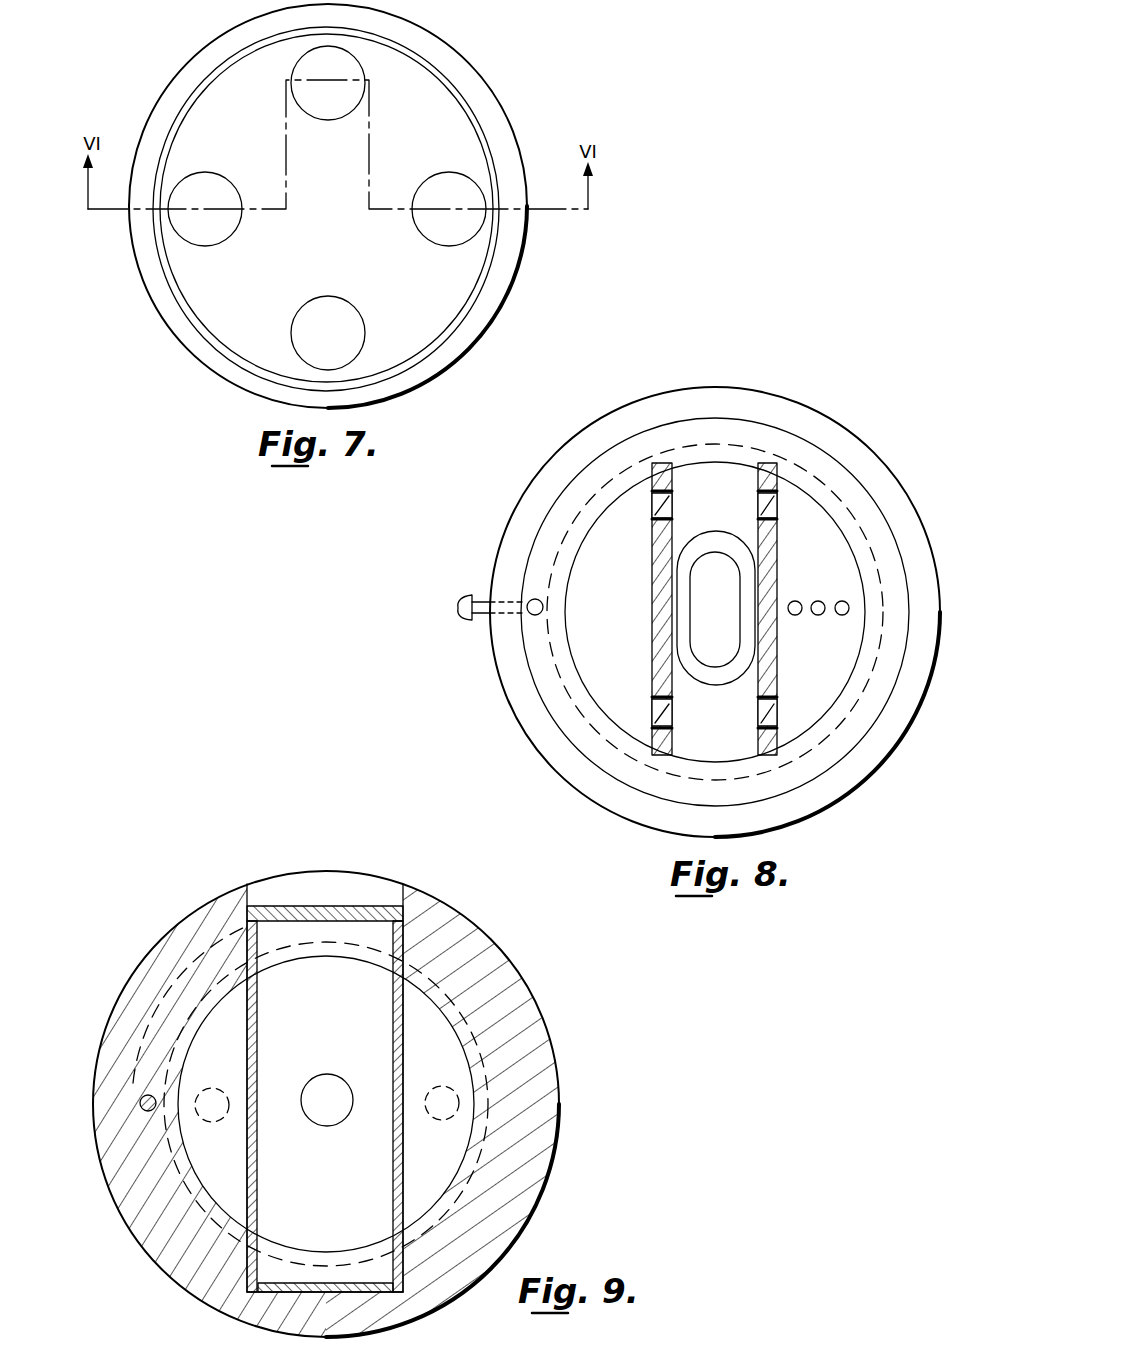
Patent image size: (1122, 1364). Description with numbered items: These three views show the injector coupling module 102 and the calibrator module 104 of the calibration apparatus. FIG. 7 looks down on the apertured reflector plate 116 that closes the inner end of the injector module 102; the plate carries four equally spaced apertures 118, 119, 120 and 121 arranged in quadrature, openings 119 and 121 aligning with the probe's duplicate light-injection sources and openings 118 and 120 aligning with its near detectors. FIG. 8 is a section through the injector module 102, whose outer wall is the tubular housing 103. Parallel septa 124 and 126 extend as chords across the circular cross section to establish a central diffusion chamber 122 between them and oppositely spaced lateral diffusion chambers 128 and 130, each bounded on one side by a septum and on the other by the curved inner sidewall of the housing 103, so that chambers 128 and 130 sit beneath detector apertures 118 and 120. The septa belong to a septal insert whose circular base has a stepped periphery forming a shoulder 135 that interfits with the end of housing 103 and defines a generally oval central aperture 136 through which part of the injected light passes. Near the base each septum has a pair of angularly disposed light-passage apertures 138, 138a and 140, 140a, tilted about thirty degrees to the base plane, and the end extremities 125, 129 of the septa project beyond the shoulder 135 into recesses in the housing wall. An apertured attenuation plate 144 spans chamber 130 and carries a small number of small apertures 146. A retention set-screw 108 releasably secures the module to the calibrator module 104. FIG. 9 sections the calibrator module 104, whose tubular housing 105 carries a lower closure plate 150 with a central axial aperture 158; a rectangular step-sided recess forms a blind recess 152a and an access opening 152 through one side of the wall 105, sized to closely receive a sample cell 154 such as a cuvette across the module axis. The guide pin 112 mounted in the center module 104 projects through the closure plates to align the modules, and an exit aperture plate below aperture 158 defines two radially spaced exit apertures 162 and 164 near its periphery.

In FIG. 7, the injector coupling module 102 is at (432, 24).
In FIG. 8, the injector coupling module 102 is at (846, 486).
In FIG. 8, the tubular housing 103 is at (887, 653).
In FIG. 9, the calibrator module 104 is at (520, 930).
In FIG. 8, the tubular housing 105 is at (533, 713).
In FIG. 9, the tubular housing 105 is at (162, 955).
In FIG. 8, the retention set-screw 108 is at (458, 616).
In FIG. 9, the guide pin 112 is at (148, 1097).
In FIG. 7, the reflector plate 116 is at (229, 278).
In FIG. 7, the aperture 118 is at (202, 183).
In FIG. 7, the aperture 119 is at (308, 60).
In FIG. 7, the aperture 120 is at (445, 180).
In FIG. 7, the aperture 121 is at (327, 307).
In FIG. 8, the central diffusion chamber 122 is at (735, 707).
In FIG. 8, the septum 124 is at (660, 610).
In FIG. 8, the end extremity of septum 125 is at (653, 462).
In FIG. 8, the septum 126 is at (776, 545).
In FIG. 8, the lateral diffusion chamber 128 is at (625, 552).
In FIG. 8, the bar end portion 129 is at (766, 465).
In FIG. 8, the lateral diffusion chamber 130 is at (832, 642).
In FIG. 8, the shoulder 135 is at (550, 750).
In FIG. 8, the oval central aperture 136 is at (713, 568).
In FIG. 8, the light-passage aperture 138 is at (657, 708).
In FIG. 8, the light-passage aperture 138a is at (655, 507).
In FIG. 8, the light-passage aperture 140 is at (769, 708).
In FIG. 8, the light-passage aperture 140a is at (766, 507).
In FIG. 8, the attenuation plate 144 is at (820, 567).
In FIG. 8, the small apertures 146 is at (797, 601).
In FIG. 9, the closure plate 150 is at (228, 1152).
In FIG. 9, the access opening 152 is at (347, 884).
In FIG. 9, the blind recess 152a is at (287, 1273).
In FIG. 9, the sample cell 154 is at (258, 1020).
In FIG. 9, the central axial aperture 158 is at (314, 1109).
In FIG. 9, the exit aperture 162 is at (227, 1075).
In FIG. 9, the exit aperture 164 is at (445, 1085).